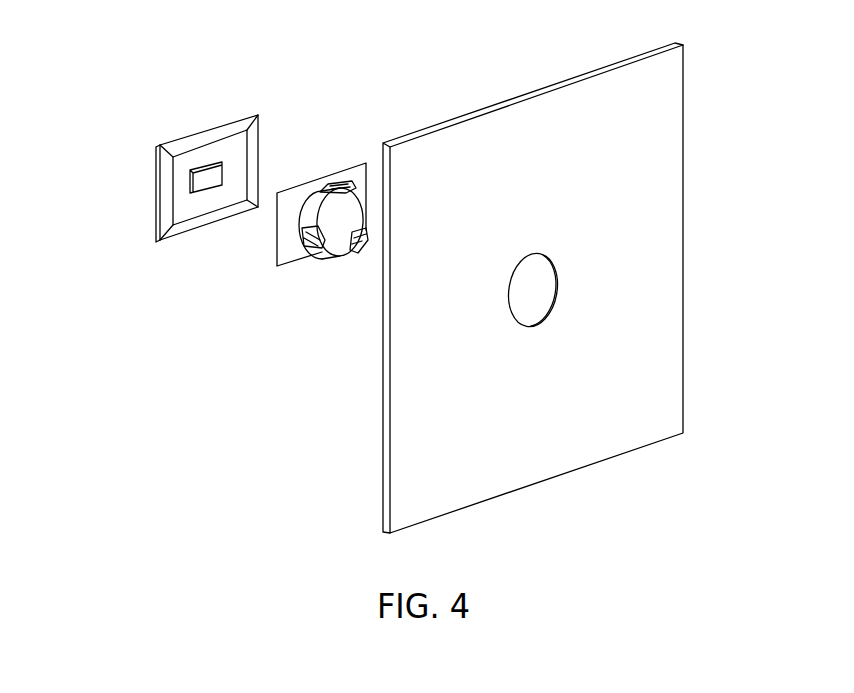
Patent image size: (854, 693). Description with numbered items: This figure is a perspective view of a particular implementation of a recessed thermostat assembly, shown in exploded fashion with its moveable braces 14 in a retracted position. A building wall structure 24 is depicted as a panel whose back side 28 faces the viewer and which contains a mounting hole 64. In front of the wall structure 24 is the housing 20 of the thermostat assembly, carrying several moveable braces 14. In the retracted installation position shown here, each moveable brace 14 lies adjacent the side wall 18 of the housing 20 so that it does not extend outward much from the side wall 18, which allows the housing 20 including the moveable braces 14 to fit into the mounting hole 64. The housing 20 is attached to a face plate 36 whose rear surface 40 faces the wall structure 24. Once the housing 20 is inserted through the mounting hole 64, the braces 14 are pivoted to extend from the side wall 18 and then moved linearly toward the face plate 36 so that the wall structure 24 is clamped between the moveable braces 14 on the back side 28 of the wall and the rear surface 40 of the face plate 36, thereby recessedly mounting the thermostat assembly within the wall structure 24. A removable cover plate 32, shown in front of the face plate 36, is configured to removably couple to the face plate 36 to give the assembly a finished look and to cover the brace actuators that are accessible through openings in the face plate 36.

The moveable brace 14 is at (352, 181).
The side wall 18 is at (311, 200).
The housing 20 is at (278, 244).
The building wall structure 24 is at (586, 288).
The back side of the wall 28 is at (613, 169).
The removable cover plate 32 is at (174, 165).
The face plate 36 is at (270, 245).
The rear surface of the face plate 40 is at (278, 223).
The mounting hole 64 is at (540, 286).